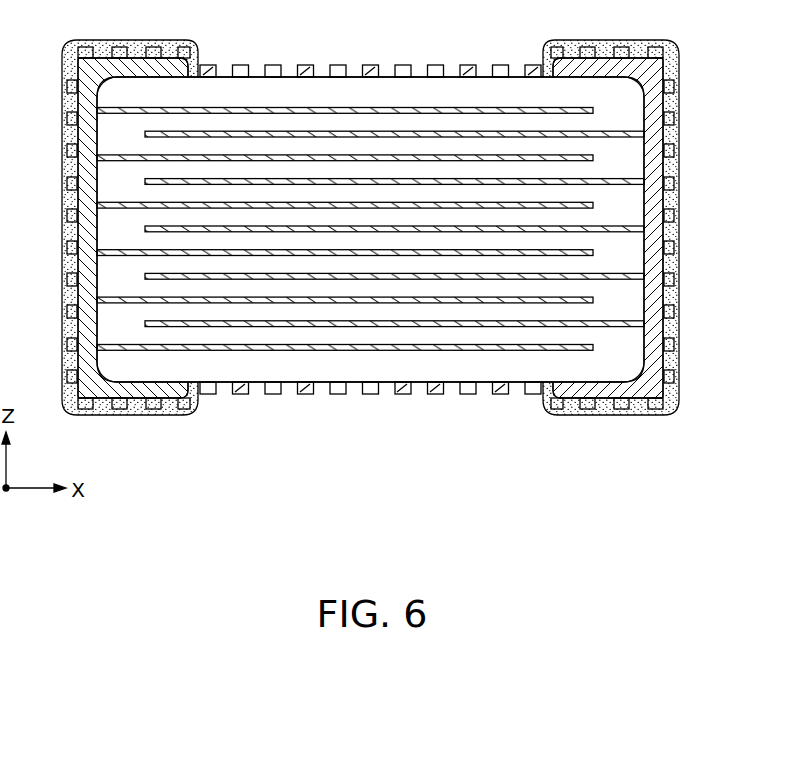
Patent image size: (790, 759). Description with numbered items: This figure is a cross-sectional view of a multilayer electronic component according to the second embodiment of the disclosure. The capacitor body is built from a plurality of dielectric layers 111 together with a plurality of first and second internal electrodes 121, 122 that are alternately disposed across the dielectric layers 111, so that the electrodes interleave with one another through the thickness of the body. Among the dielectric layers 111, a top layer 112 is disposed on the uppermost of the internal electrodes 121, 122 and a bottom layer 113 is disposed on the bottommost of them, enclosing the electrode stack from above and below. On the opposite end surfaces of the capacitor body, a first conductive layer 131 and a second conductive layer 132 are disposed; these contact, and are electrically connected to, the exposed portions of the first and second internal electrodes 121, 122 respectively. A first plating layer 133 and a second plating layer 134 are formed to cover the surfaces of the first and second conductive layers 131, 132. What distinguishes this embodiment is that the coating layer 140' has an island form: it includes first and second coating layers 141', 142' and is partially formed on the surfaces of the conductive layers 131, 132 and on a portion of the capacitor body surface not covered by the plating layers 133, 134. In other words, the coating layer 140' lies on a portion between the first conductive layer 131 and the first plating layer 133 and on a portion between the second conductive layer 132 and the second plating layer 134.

The dielectric layer 111 is at (622, 108).
The top layer 112 is at (280, 93).
The bottom layer 113 is at (303, 370).
The first internal electrode 121 is at (357, 109).
The second internal electrode 122 is at (403, 134).
The first conductive layer 131 is at (148, 392).
The second conductive layer 132 is at (590, 392).
The first plating layer 133 is at (103, 410).
The second plating layer 134 is at (633, 410).
The coating layer 140' is at (433, 434).
The first coating layer 141' is at (458, 417).
The second coating layer 142' is at (400, 417).